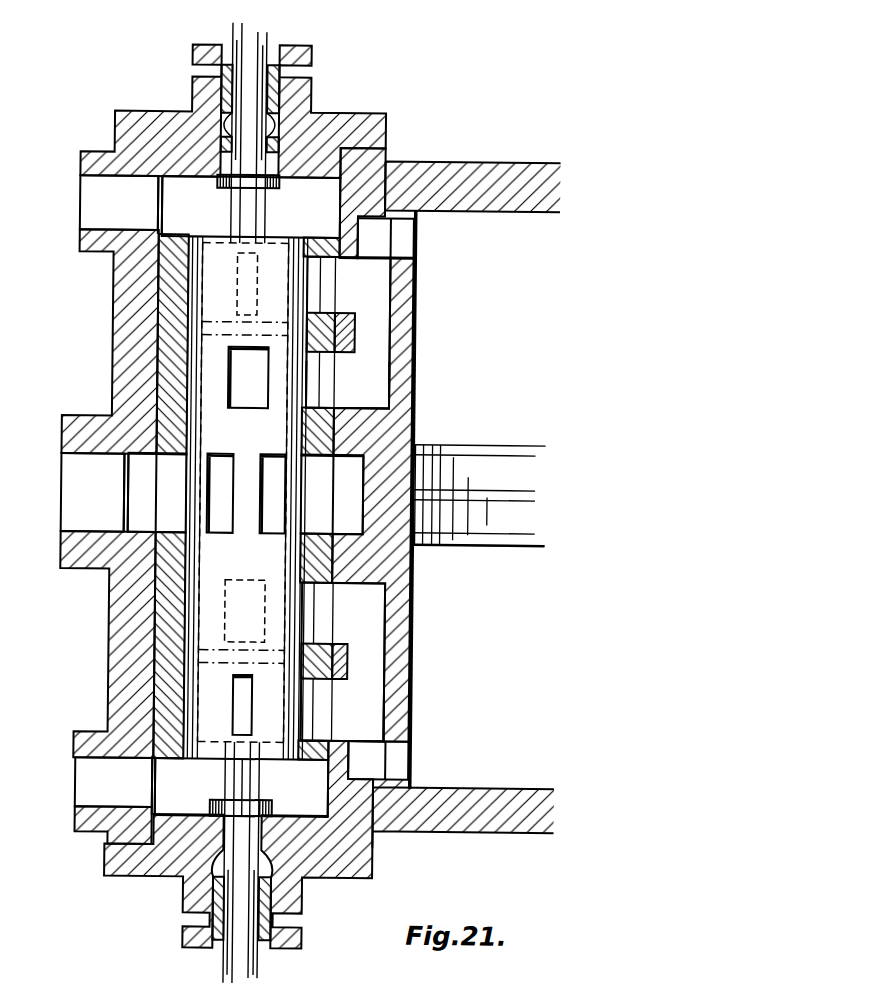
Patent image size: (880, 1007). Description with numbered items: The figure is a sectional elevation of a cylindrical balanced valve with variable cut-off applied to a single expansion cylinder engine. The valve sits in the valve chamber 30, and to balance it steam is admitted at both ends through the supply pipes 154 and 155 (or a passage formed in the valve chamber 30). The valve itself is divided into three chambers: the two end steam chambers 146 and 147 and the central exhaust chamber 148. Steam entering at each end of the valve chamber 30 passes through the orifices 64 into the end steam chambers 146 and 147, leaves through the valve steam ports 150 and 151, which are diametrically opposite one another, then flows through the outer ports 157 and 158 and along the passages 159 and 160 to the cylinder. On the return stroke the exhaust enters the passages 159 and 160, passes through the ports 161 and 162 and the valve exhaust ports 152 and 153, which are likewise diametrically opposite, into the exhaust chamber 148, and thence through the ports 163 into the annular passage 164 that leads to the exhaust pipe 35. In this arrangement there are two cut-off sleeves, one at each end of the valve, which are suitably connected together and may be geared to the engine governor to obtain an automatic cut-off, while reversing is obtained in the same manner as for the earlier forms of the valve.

The valve chamber 30 is at (110, 651).
The exhaust pipe 35 is at (93, 492).
The steam inlet orifices 64 is at (279, 236).
The steam chamber 146 is at (240, 696).
The steam chamber 147 is at (205, 308).
The exhaust chamber 148 is at (290, 549).
The steam port 150 is at (252, 709).
The steam port 151 is at (255, 270).
The exhaust port 152 is at (226, 608).
The exhaust port 153 is at (230, 394).
The supply pipe 154 is at (114, 782).
The supply pipe 155 is at (119, 202).
The outer port 157 is at (322, 713).
The outer port 158 is at (322, 299).
The passage 159 is at (378, 760).
The passage 160 is at (386, 238).
The exhaust port 161 is at (342, 662).
The exhaust port 162 is at (347, 385).
The ports 163 is at (273, 512).
The annular passage 164 is at (250, 494).